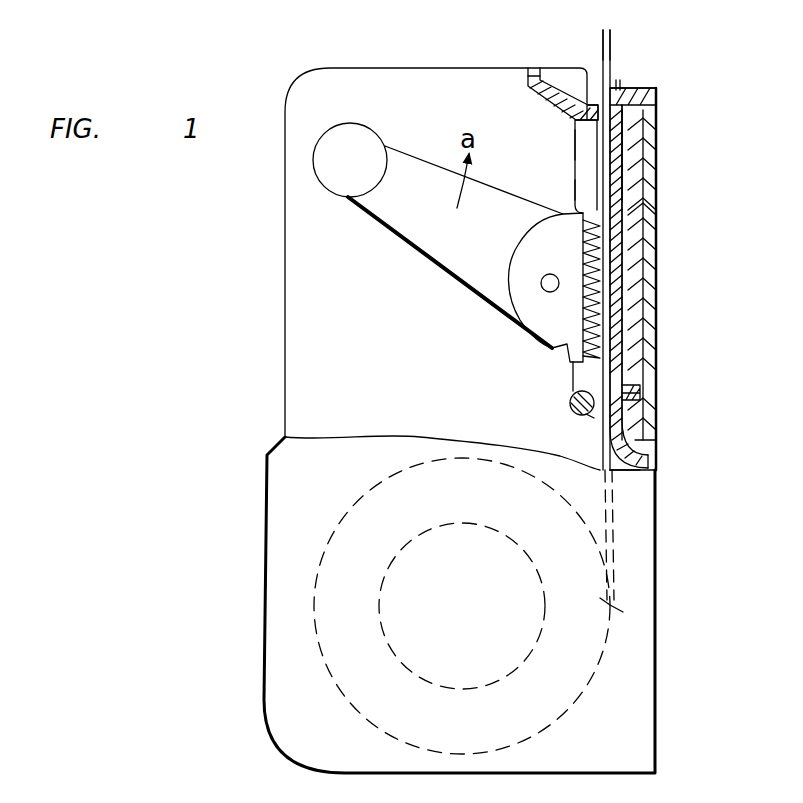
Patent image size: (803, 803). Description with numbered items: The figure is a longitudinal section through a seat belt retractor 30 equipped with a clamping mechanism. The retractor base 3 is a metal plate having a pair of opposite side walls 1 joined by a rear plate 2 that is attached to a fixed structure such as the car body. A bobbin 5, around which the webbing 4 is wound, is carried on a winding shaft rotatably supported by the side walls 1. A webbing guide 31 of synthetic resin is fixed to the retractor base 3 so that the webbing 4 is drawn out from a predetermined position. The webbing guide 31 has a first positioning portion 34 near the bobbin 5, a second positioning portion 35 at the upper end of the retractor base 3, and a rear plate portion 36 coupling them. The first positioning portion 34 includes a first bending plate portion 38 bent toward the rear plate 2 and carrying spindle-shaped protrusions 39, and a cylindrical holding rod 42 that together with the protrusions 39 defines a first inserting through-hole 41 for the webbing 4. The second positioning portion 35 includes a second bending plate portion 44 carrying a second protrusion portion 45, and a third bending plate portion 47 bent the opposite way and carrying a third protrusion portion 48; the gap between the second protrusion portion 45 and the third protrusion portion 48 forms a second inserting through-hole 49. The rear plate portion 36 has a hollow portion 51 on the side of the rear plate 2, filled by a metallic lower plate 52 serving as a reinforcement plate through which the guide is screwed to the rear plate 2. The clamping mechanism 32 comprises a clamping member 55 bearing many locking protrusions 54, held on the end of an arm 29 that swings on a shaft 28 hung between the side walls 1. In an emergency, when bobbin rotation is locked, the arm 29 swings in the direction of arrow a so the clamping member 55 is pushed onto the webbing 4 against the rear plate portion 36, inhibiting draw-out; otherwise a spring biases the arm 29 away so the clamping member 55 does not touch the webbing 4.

The side walls 1 is at (283, 355).
The rear plate 2 is at (640, 393).
The retractor base 3 is at (660, 322).
The webbing 4 is at (621, 65).
The bobbin 5 is at (543, 632).
The shaft 28 is at (350, 127).
The arm 29 is at (425, 258).
The retractor 30 is at (281, 251).
The webbing guide 31 is at (570, 166).
The clamping mechanism 32 is at (389, 233).
The first positioning portion 34 is at (617, 473).
The second positioning portion 35 is at (553, 82).
The rear plate portion 36 is at (637, 185).
The first bending plate portion 38 is at (641, 450).
The protrusions of first protrusion portion 39 is at (610, 475).
The first inserting through-hole 41 is at (592, 418).
The holding rod 42 is at (571, 396).
The second bending plate portion 44 is at (640, 102).
The second protrusion portion 45 is at (625, 82).
The third bending plate portion 47 is at (593, 95).
The third protrusion portion 48 is at (611, 68).
The second inserting through-hole 49 is at (575, 135).
The hollow portion 51 is at (630, 140).
The metallic lower plate 52 is at (630, 220).
The locking protrusions 54 is at (575, 192).
The clamping member 55 is at (527, 310).